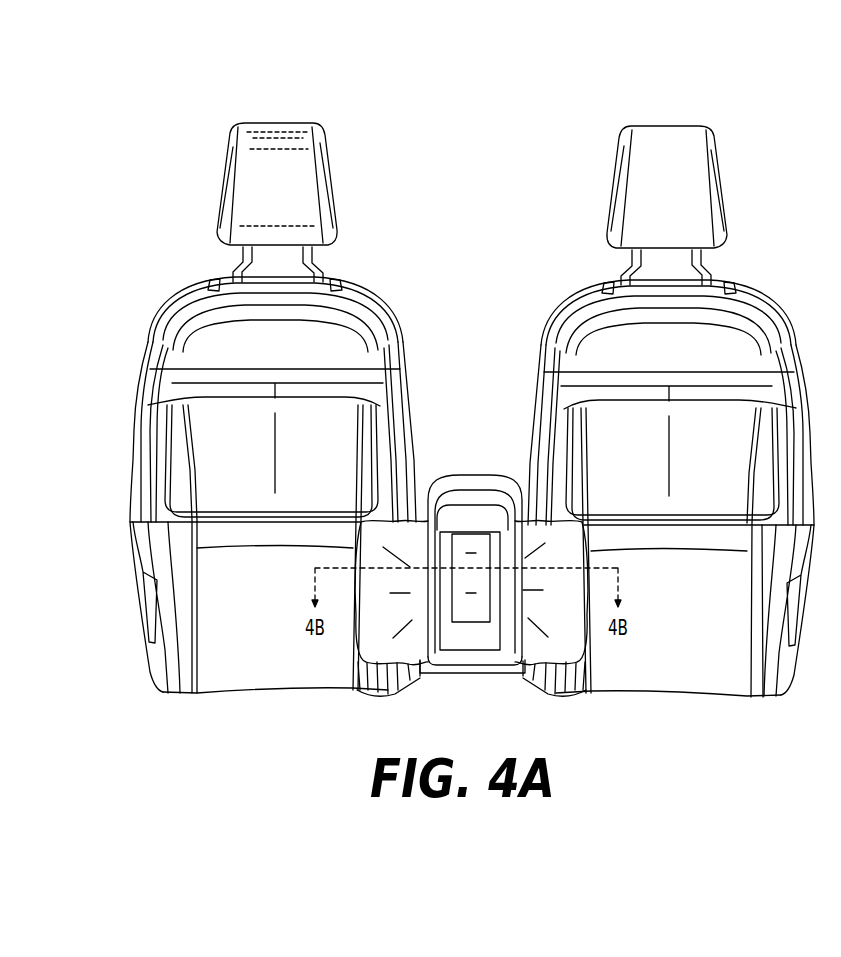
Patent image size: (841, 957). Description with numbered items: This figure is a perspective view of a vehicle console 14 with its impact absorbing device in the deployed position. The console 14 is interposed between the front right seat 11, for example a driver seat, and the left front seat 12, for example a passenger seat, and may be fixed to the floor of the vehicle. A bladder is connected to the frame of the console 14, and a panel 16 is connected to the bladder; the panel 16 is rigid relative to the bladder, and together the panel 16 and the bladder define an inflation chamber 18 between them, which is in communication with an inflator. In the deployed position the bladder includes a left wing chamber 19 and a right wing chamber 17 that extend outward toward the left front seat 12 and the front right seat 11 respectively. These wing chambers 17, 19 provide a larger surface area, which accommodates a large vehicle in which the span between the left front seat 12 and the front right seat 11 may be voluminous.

The front right seat 11 is at (780, 297).
The left front seat 12 is at (403, 310).
The vehicle console 14 is at (492, 478).
The panel 16 is at (470, 612).
The right wing chamber 17 is at (572, 595).
The inflation chamber 18 is at (530, 660).
The left wing chamber 19 is at (367, 602).